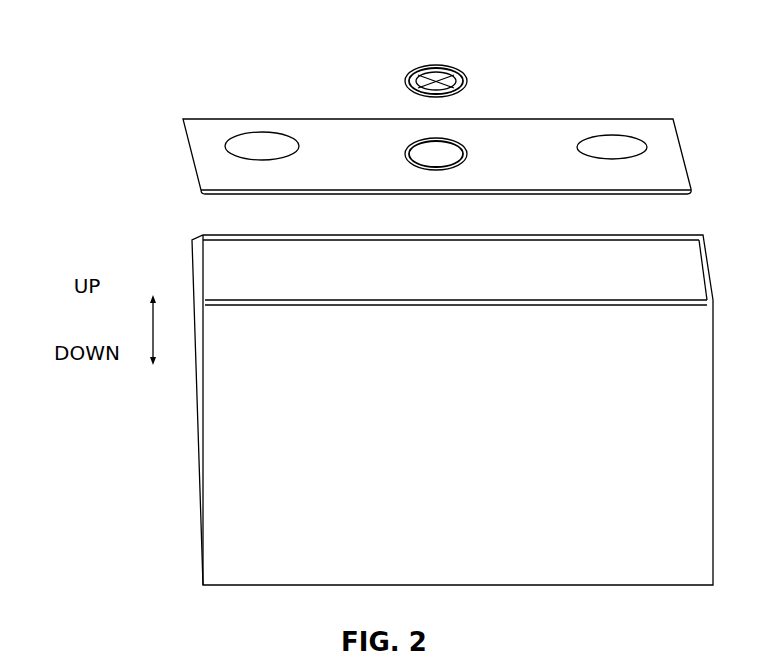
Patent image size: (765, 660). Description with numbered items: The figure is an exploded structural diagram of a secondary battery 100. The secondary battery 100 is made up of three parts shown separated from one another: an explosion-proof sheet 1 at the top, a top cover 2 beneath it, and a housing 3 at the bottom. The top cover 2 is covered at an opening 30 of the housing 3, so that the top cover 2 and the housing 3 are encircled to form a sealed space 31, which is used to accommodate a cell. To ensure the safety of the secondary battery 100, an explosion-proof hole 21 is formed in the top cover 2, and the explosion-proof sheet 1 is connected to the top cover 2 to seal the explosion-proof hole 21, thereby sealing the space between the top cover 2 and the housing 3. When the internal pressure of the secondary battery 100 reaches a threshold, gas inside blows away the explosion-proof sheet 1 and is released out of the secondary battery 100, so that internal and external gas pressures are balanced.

The secondary battery 100 is at (209, 16).
The explosion-proof sheet 1 is at (407, 72).
The top cover 2 is at (422, 146).
The explosion-proof hole 21 is at (432, 152).
The housing 3 is at (440, 400).
The opening 30 is at (203, 236).
The sealed space 31 is at (664, 247).